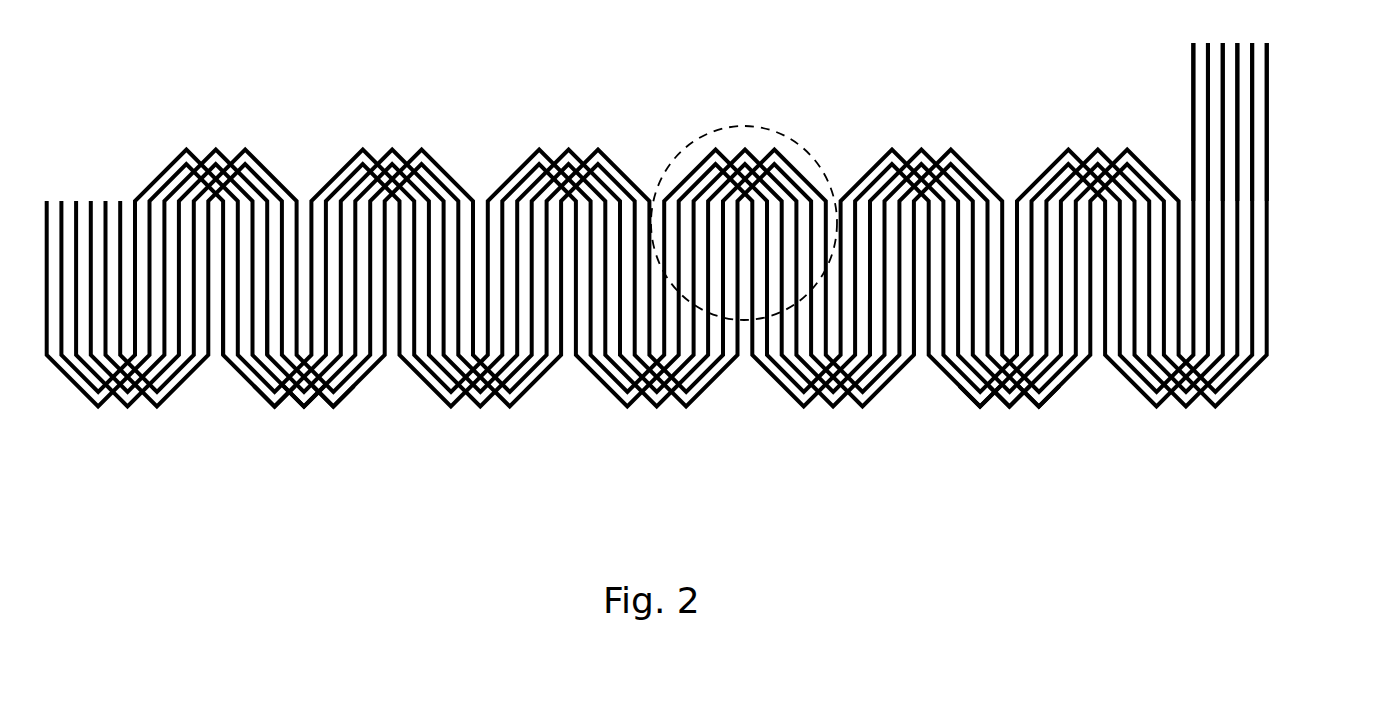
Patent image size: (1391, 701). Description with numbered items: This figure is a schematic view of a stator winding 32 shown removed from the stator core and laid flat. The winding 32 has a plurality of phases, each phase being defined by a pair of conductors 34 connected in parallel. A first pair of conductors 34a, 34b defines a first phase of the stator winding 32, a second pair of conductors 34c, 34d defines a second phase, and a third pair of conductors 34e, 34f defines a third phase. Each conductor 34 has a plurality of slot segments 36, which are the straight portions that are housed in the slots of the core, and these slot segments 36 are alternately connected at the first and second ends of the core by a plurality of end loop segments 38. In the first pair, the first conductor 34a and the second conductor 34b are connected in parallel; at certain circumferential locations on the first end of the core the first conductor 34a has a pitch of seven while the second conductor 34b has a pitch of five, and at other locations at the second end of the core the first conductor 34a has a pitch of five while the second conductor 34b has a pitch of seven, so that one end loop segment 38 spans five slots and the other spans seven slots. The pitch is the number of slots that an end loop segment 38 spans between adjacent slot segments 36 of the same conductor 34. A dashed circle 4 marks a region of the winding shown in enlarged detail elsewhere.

The stator winding 32 is at (713, 277).
The conductor 34 is at (1222, 75).
The first conductor 34a is at (342, 177).
The second conductor 34b is at (350, 167).
The conductor 34c is at (362, 153).
The conductor 34d is at (447, 177).
The conductor 34e is at (433, 163).
The conductor 34f is at (423, 153).
The slot segment 36 is at (222, 312).
The end loop segment 38 is at (263, 403).
The detail region of FIG. 4 is at (753, 123).